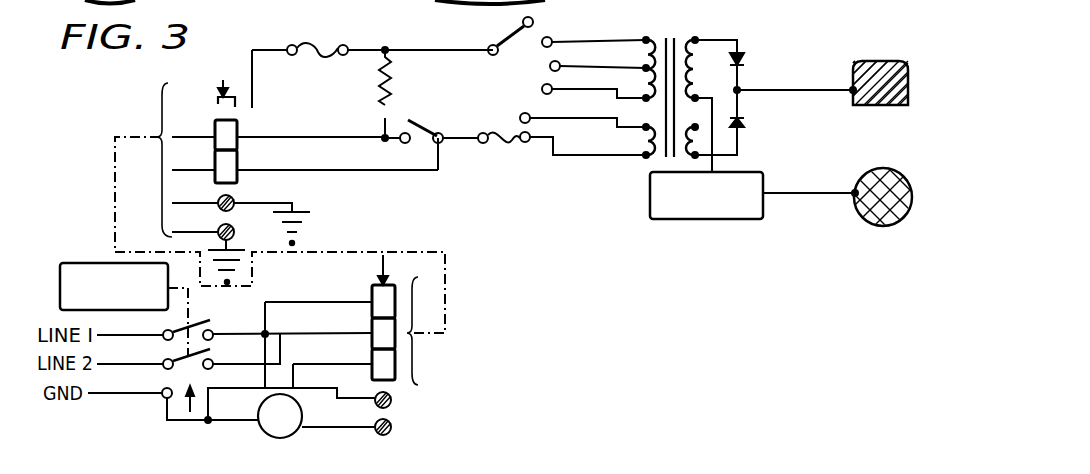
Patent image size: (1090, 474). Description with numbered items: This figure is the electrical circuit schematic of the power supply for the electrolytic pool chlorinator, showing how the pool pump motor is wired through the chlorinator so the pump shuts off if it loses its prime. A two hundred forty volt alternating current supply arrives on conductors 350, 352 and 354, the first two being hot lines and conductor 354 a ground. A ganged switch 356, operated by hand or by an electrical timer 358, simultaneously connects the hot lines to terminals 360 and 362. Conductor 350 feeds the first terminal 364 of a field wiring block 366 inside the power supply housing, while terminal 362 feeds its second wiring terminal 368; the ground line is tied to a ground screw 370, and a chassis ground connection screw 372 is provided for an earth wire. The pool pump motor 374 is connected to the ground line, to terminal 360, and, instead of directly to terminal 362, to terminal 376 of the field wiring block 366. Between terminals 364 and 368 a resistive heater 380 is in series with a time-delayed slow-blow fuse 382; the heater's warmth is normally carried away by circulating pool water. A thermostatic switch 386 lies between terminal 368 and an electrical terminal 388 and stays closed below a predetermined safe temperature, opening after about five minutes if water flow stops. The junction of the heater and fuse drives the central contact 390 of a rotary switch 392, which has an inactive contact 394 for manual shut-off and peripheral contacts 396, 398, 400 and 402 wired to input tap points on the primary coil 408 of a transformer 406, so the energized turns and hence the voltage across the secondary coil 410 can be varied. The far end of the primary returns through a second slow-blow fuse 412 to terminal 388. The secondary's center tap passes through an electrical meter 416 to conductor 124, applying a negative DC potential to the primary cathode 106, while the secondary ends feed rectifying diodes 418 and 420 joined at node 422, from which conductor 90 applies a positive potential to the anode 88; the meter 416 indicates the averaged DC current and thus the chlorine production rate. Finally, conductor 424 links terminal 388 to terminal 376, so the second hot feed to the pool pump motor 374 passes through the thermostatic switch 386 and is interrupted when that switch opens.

The anode 88 is at (908, 86).
The conductor 90 is at (811, 98).
The primary cathode 106 is at (898, 222).
The conductor 124 is at (792, 198).
The conductor 350 is at (106, 329).
The conductor 352 is at (106, 357).
The conductor 354 is at (104, 387).
The ganged switch 356 is at (188, 410).
The electrical timer 358 is at (90, 262).
The terminal 360 is at (218, 326).
The terminal 362 is at (218, 354).
The first terminal 364 is at (215, 103).
The field wiring block 366 is at (223, 80).
The second wiring terminal 368 is at (215, 132).
The ground screw 370 is at (233, 202).
The chassis ground connection screw 372 is at (234, 235).
The pool pump motor 374 is at (303, 418).
The terminal 376 is at (215, 162).
The resistive heater 380 is at (392, 74).
The time-delayed slow-blow fuse 382 is at (318, 46).
The thermostatic switch 386 is at (437, 123).
The electrical terminal 388 is at (441, 143).
The central contact 390 is at (498, 40).
The rotary switch 392 is at (455, 108).
The inactive contact 394 is at (535, 20).
The peripheral contact 396 is at (552, 40).
The peripheral contact 398 is at (559, 63).
The peripheral contact 400 is at (552, 86).
The peripheral contact 402 is at (545, 114).
The transformer 406 is at (708, 79).
The primary coil 408 is at (655, 79).
The secondary coil 410 is at (695, 40).
The time-delayed slow-blow fuse 412 is at (527, 143).
The electrical meter 416 is at (760, 220).
The rectifying diode 418 is at (745, 60).
The rectifying diode 420 is at (744, 119).
The node 422 is at (740, 89).
The conductor 424 is at (345, 171).